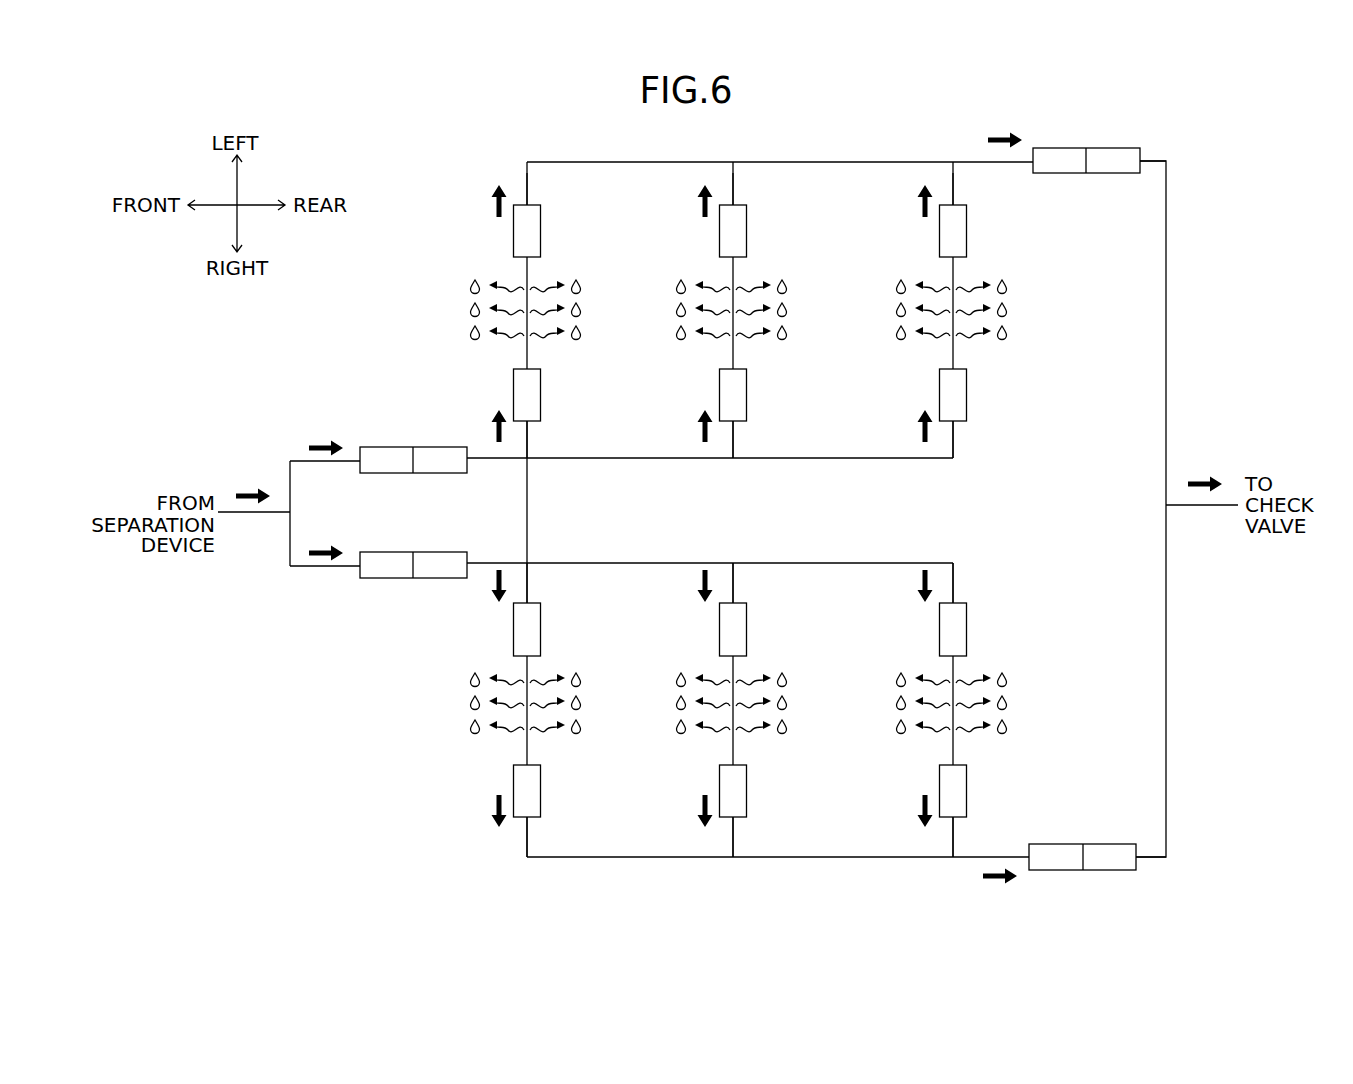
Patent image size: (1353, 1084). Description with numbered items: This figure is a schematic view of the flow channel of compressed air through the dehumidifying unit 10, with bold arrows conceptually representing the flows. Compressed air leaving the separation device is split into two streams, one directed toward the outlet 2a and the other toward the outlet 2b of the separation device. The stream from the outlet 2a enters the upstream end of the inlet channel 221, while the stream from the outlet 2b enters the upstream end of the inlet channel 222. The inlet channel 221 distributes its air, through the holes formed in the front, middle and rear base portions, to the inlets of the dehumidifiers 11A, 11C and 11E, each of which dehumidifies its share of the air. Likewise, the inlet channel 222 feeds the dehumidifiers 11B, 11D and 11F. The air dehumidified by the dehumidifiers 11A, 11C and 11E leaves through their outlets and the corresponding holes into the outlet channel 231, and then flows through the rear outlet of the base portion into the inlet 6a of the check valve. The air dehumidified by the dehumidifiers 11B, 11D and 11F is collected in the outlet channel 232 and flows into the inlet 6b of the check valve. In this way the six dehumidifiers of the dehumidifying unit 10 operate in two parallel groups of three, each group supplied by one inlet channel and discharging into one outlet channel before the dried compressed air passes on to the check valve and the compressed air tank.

The dehumidifying unit 10 is at (414, 117).
The dehumidifier 11A is at (516, 710).
The dehumidifier 11B is at (516, 310).
The dehumidifier 11C is at (724, 710).
The dehumidifier 11D is at (724, 310).
The dehumidifier 11E is at (941, 710).
The dehumidifier 11F is at (944, 310).
The outlet 2a is at (390, 578).
The outlet 2b is at (390, 447).
The inlet 6a is at (1107, 870).
The inlet 6b is at (1115, 173).
The inlet channel 221 is at (775, 545).
The inlet channel 222 is at (871, 480).
The outlet channel 231 is at (809, 878).
The outlet channel 232 is at (820, 137).